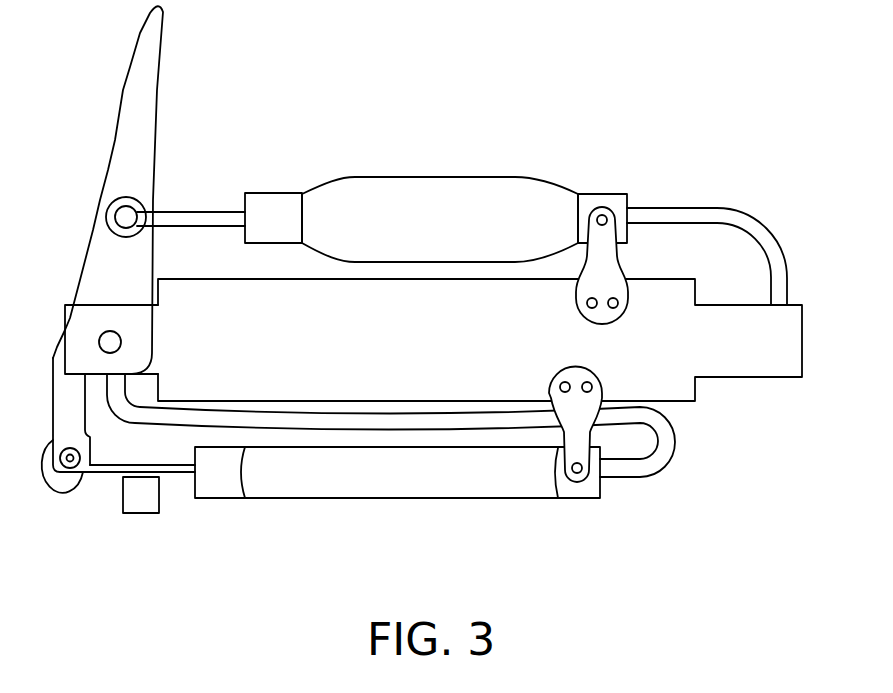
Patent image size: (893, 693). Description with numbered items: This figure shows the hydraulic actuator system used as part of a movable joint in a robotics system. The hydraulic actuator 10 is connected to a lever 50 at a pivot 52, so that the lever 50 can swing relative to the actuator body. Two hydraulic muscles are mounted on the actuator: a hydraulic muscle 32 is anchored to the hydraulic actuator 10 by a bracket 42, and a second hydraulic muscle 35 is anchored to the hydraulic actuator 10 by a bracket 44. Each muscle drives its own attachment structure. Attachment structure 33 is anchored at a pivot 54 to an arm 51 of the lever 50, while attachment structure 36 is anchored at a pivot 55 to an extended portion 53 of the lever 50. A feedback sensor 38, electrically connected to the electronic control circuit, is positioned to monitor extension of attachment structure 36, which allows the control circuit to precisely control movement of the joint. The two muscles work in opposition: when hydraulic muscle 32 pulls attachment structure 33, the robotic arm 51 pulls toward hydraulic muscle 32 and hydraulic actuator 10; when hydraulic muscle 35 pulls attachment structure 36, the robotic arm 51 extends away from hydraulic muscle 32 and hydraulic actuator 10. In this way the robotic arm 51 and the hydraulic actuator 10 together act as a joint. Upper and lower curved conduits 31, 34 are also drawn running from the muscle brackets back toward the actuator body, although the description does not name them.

The hydraulic actuator 10 is at (748, 413).
The upper pipe 31 is at (764, 226).
The hydraulic muscle 32 is at (468, 177).
The attachment structure 33 is at (217, 212).
The lower pipe 34 is at (634, 480).
The hydraulic muscle 35 is at (382, 498).
The attachment structure 36 is at (170, 474).
The feedback sensor 38 is at (137, 513).
The bracket 42 is at (622, 270).
The bracket 44 is at (578, 482).
The lever 50 is at (112, 138).
The arm 51 is at (158, 70).
The pivot 52 is at (99, 338).
The extended portion 53 is at (50, 490).
The pivot 54 is at (108, 222).
The pivot 55 is at (73, 461).